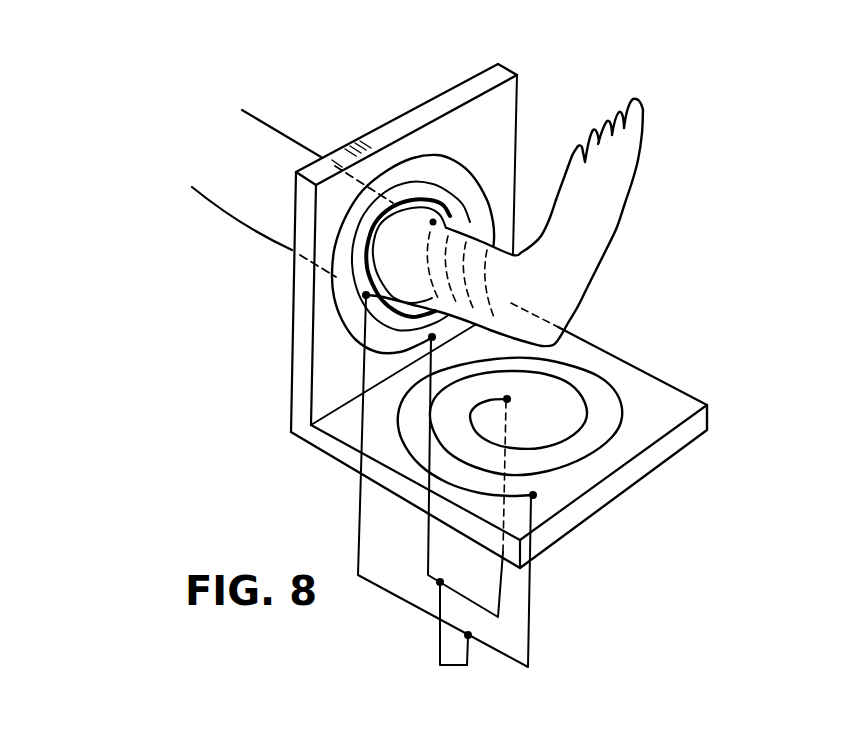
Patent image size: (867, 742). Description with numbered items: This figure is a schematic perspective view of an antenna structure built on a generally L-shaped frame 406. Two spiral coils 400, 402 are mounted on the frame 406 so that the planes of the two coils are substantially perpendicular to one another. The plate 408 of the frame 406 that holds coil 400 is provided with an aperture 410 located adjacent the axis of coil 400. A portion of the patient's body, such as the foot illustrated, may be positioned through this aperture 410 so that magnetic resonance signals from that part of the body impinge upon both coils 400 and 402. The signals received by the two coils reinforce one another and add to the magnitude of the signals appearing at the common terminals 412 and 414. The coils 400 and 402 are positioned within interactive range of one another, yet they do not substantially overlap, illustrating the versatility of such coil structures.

The spiral coil 400 is at (411, 157).
The spiral coil 402 is at (610, 450).
The frame 406 is at (300, 453).
The plate 408 is at (300, 393).
The aperture 410 is at (434, 218).
The common terminal 412 is at (474, 683).
The common terminal 414 is at (478, 672).